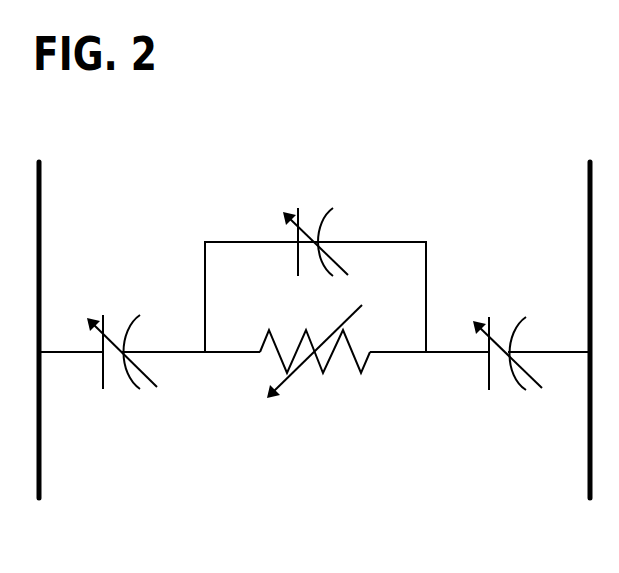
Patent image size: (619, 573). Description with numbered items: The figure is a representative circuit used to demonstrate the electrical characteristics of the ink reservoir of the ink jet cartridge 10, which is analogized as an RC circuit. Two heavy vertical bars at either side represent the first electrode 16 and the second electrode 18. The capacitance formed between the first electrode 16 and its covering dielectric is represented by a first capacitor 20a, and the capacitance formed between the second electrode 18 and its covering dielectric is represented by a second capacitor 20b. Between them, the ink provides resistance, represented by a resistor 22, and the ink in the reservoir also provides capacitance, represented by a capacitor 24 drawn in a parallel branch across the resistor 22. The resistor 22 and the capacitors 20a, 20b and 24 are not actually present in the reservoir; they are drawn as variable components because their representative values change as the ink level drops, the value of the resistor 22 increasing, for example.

The ink jet cartridge 10 is at (365, 148).
The first electrode 16 is at (41, 222).
The second electrode 18 is at (588, 212).
The first capacitor 20a is at (103, 373).
The second capacitor 20b is at (489, 371).
The resistor 22 is at (328, 362).
The capacitor 24 is at (298, 260).